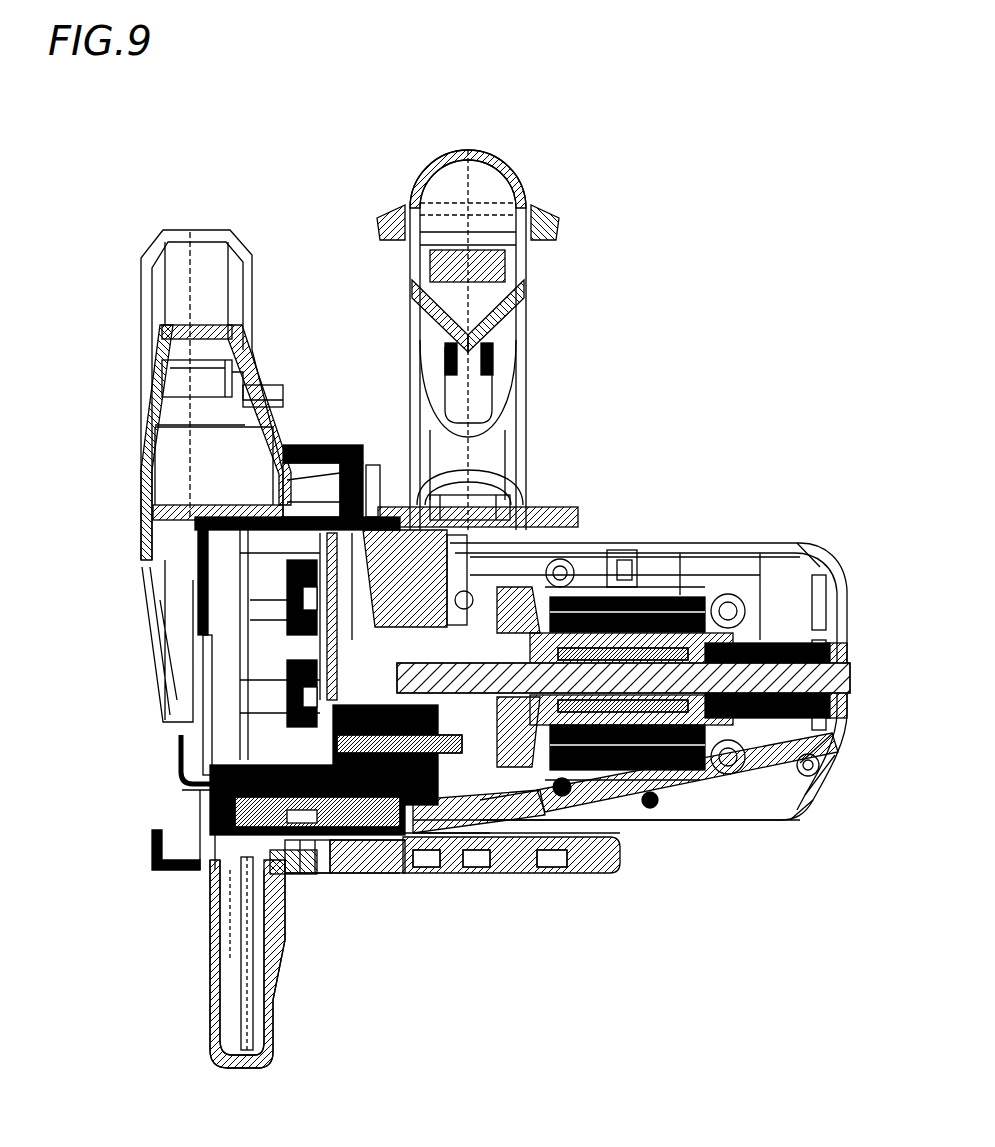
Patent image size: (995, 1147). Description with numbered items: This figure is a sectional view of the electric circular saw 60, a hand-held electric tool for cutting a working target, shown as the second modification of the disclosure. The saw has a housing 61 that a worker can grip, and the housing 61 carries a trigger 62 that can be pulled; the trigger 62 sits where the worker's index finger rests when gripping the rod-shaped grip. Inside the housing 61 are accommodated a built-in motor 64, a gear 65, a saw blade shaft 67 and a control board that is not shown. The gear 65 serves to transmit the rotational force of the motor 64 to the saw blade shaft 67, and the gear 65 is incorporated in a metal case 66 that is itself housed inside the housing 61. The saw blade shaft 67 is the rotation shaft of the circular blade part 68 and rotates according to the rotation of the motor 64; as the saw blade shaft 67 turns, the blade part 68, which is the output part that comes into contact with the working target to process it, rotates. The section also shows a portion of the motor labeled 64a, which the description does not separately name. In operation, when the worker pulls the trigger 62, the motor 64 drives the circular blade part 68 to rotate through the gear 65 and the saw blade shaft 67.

The electric circular saw 60 is at (634, 241).
The housing 61 is at (567, 523).
The trigger 62 is at (528, 387).
The motor 64 is at (653, 580).
The motor stator 64a is at (680, 793).
The gear 65 is at (448, 873).
The metal case 66 is at (357, 870).
The saw blade shaft 67 is at (322, 870).
The circular blade part 68 is at (240, 947).